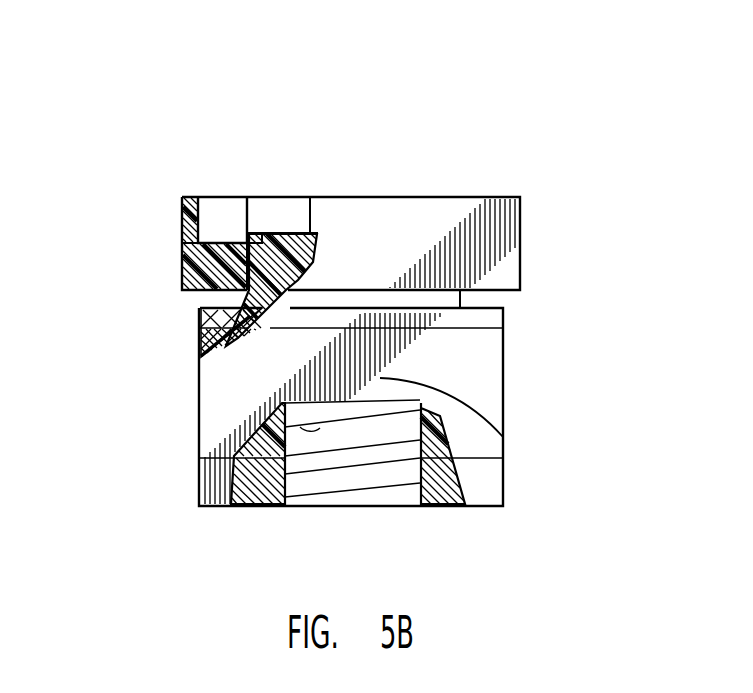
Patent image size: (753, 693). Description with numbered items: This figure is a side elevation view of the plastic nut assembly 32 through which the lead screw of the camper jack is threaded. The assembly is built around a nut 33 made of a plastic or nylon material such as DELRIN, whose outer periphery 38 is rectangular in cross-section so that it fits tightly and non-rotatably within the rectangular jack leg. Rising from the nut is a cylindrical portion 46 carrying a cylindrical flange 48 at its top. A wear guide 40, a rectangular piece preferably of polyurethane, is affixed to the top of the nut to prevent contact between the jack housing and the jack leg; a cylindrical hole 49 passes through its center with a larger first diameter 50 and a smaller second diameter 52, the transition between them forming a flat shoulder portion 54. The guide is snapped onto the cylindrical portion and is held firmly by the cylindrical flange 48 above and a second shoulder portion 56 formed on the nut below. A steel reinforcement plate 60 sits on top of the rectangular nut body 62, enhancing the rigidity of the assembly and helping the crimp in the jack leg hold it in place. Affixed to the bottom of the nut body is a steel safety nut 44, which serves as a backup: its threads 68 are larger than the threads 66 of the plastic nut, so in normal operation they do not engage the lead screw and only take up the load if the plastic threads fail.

The nut assembly 32 is at (158, 322).
The nut 33 is at (487, 366).
The outer periphery 38 is at (503, 412).
The wear guide 40 is at (507, 240).
The safety nut 44 is at (493, 484).
The cylindrical portion 46 is at (283, 222).
The cylindrical flange 48 is at (250, 205).
The cylindrical hole 49 is at (282, 203).
The first diameter 50 is at (228, 203).
The second diameter 52 is at (183, 257).
The flat shoulder portion 54 is at (237, 203).
The second shoulder portion 56 is at (203, 340).
The steel reinforcement plate 60 is at (503, 316).
The nut body 62 is at (503, 437).
The threads 66 is at (297, 437).
The threads 68 is at (392, 485).